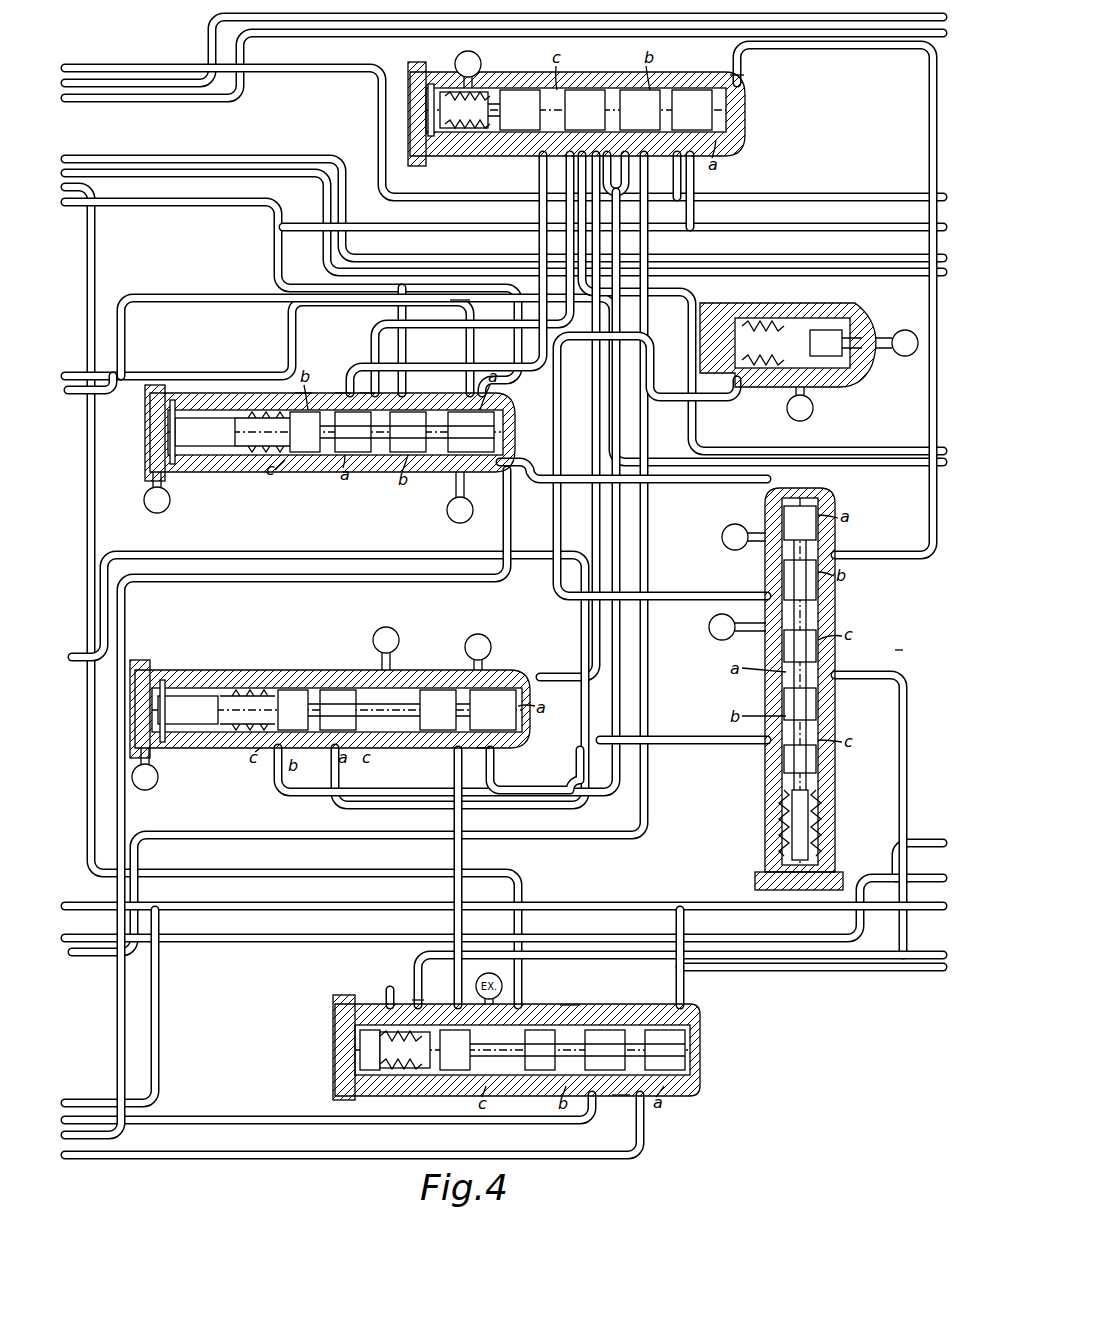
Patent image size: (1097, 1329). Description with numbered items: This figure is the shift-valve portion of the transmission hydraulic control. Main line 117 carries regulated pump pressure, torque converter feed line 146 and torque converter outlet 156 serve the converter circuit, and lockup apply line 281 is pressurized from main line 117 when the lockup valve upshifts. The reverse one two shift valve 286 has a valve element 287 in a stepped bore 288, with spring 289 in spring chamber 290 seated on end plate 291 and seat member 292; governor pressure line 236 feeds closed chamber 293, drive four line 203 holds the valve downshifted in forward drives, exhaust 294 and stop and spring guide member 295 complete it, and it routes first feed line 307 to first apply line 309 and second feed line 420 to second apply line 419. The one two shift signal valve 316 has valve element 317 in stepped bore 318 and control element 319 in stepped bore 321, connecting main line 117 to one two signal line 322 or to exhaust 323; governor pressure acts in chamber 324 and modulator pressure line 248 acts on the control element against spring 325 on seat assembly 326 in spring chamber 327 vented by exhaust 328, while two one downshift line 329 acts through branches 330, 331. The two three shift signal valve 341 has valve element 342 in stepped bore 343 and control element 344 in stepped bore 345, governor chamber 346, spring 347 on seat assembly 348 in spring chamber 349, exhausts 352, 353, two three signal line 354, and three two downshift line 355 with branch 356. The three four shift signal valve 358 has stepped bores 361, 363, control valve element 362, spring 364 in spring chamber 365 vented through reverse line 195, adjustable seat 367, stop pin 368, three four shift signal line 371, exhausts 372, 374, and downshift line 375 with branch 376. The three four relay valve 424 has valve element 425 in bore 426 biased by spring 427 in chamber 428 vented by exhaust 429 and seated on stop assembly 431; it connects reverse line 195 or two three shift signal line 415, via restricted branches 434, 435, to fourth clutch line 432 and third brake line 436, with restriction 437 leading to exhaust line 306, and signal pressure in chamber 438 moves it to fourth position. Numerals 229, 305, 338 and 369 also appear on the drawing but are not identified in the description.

The main line 117 is at (140, 202).
The torque converter feed line 146 is at (146, 159).
The torque converter outlet 156 is at (80, 86).
The reverse line 195 is at (928, 197).
The drive four line 203 is at (118, 98).
The exhaust pressure regulator 229 is at (820, 368).
The governor pressure line 236 is at (108, 392).
The modulator pressure line 248 is at (126, 376).
The lockup apply line 281 is at (92, 173).
The reverse one two shift valve 286 is at (695, 1102).
The valve element 287 is at (549, 877).
The stepped bore 288 is at (620, 1095).
The spring 289 is at (395, 1070).
The spring chamber 290 is at (380, 1000).
The valve body fixed end plate 291 is at (365, 1040).
The seat member 292 is at (456, 1075).
The closed chamber 293 is at (690, 1030).
The exhaust 294 is at (486, 980).
The free valve stop and spring guide member 295 is at (385, 1042).
The passage 305 is at (574, 993).
The exhaust line 306 is at (656, 340).
The first feed line 307 is at (96, 906).
The first apply line 309 is at (92, 205).
The one two shift signal valve 316 is at (290, 455).
The valve element 317 is at (414, 412).
The stepped bore 318 is at (412, 472).
The control element 319 is at (300, 393).
The stepped bore 321 is at (352, 455).
The one two signal line 322 is at (96, 1135).
The exhaust 323 is at (462, 515).
The chamber 324 is at (490, 468).
The spring 325 is at (250, 450).
The spring seat and stop assembly 326 is at (180, 432).
The spring chamber 327 is at (205, 455).
The exhaust 328 is at (148, 482).
The two one downshift line 329 is at (458, 370).
The branch 330 is at (366, 393).
The branch 331 is at (340, 393).
The exhaust port 338 is at (158, 790).
The two three shift signal valve 341 is at (232, 755).
The valve element 342 is at (446, 690).
The stepped bore 343 is at (482, 748).
The control element 344 is at (352, 690).
The stepped bore 345 is at (300, 690).
The chamber 346 is at (516, 690).
The spring 347 is at (252, 696).
The seat assembly 348 is at (170, 696).
The spring chamber 349 is at (222, 692).
The exhaust 352 is at (382, 628).
The exhaust 353 is at (480, 634).
The two three signal line 354 is at (110, 1103).
The three two downshift line 355 is at (948, 934).
The branch 356 is at (365, 755).
The three four shift signal valve 358 is at (745, 742).
The stepped bore 361 is at (816, 530).
The control valve element 362 is at (798, 690).
The stepped bore 363 is at (818, 700).
The spring 364 is at (818, 776).
The spring chamber 365 is at (820, 810).
The adjustable seat 367 is at (840, 840).
The stop pin 368 is at (788, 780).
The valve land 369 is at (783, 566).
The three four shift signal line 371 is at (890, 555).
The exhaust 372 is at (722, 534).
The exhaust 374 is at (710, 626).
The three four downshift line 375 is at (899, 660).
The branch 376 is at (840, 677).
The two three shift signal line 415 is at (636, 210).
The second apply line 419 is at (186, 1120).
The second feed line 420 is at (268, 1155).
The three four relay valve 424 is at (748, 120).
The valve element 425 is at (672, 90).
The bore 426 is at (588, 90).
The spring 427 is at (470, 132).
The chamber 428 is at (460, 92).
The exhaust 429 is at (482, 62).
The seat and valve stop assembly 431 is at (430, 90).
The fourth clutch apply line 432 is at (92, 68).
The restricted branch 434 is at (463, 451).
The restricted branch 435 is at (608, 190).
The third brake line 436 is at (566, 182).
The restriction 437 is at (543, 170).
The chamber 438 is at (738, 85).